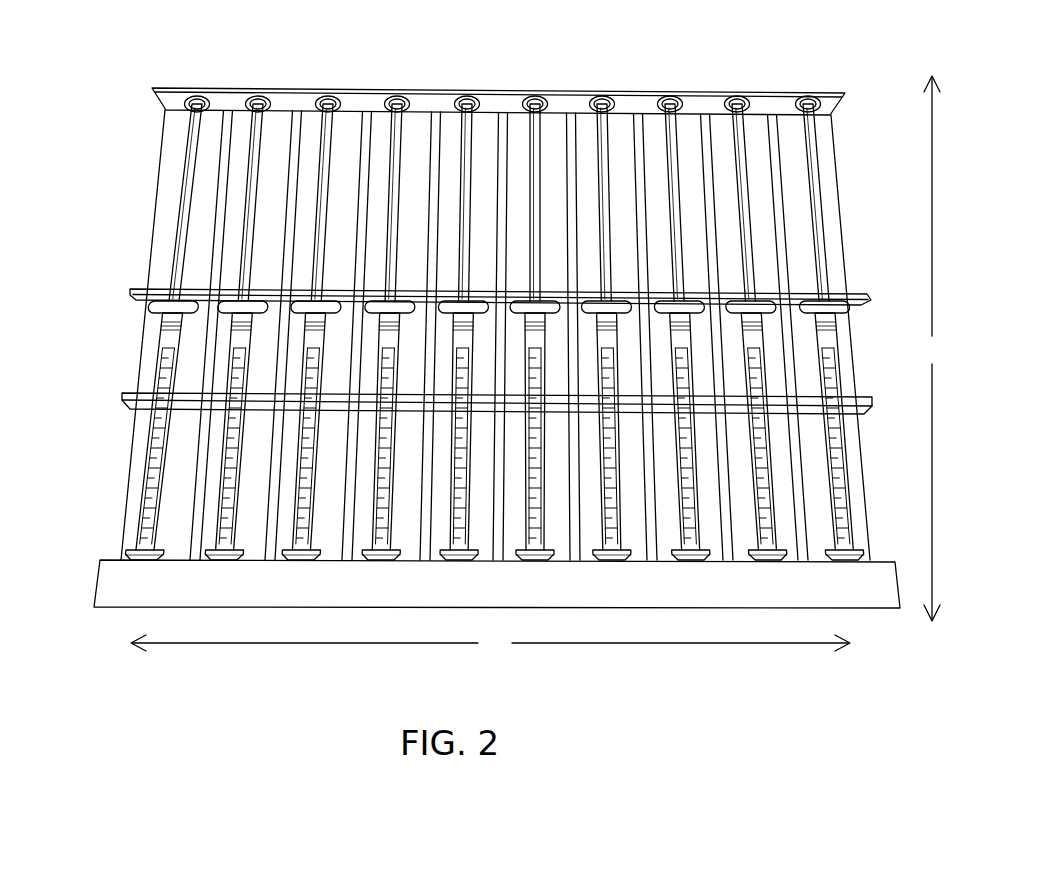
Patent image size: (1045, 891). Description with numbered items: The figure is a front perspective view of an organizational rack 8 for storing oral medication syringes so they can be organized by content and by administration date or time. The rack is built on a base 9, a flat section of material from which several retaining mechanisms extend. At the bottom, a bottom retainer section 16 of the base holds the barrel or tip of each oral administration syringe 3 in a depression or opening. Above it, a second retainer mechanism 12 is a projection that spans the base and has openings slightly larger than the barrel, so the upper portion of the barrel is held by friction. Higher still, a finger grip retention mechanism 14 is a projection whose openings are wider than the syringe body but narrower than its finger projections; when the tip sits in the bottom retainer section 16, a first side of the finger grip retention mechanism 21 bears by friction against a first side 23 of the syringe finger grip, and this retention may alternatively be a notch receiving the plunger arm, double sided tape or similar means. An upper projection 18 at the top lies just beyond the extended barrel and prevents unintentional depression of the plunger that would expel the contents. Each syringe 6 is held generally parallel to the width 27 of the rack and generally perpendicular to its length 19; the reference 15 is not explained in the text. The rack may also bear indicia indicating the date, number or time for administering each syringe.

The oral administration syringe 3 is at (707, 290).
The syringe 6 is at (597, 92).
The organizational rack 8 is at (102, 512).
The base 9 is at (776, 136).
The second retainer mechanism 12 is at (874, 399).
The finger grip retention mechanism 14 is at (133, 292).
The syringe finger flange 15 is at (148, 303).
The bottom retainer section 16 is at (867, 588).
The upper projection 18 is at (502, 75).
The length 19 is at (490, 643).
The first side of the finger grip retention mechanism 21 is at (474, 301).
The first side of the finger grip 23 is at (468, 301).
The width 27 is at (935, 348).